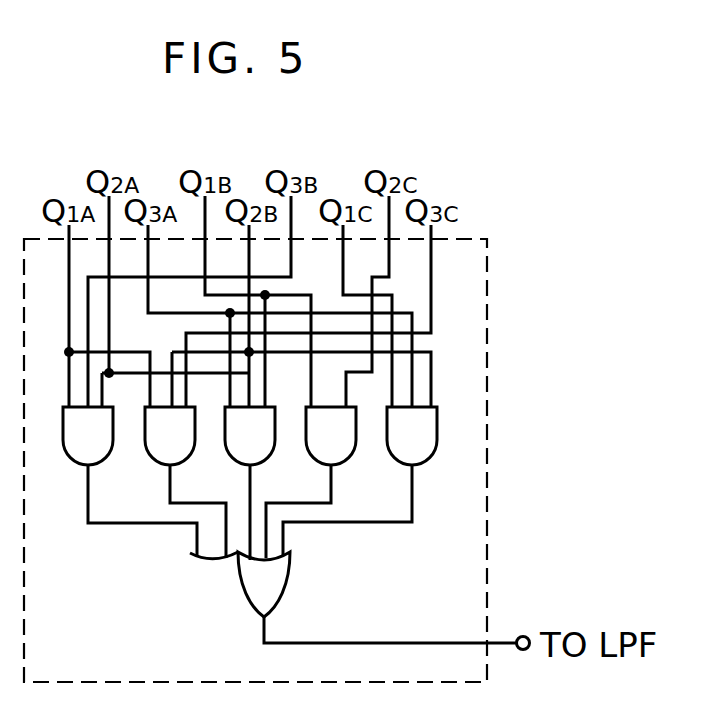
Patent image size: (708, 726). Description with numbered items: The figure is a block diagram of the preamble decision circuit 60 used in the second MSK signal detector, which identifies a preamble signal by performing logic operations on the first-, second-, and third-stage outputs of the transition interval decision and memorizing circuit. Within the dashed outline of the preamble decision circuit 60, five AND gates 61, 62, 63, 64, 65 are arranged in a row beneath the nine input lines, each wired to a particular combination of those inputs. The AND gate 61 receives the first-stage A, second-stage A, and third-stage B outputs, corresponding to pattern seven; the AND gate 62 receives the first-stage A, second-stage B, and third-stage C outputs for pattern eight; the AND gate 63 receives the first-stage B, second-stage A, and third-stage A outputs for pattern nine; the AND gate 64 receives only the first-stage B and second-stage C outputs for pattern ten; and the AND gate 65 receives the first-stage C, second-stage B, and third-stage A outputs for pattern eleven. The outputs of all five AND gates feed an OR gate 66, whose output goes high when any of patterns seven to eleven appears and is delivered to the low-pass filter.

The preamble decision circuit 60 is at (487, 245).
The AND gate 61 is at (106, 459).
The AND gate 62 is at (190, 459).
The AND gate 63 is at (270, 459).
The AND gate 64 is at (352, 459).
The AND gate 65 is at (434, 459).
The OR gate 66 is at (286, 600).